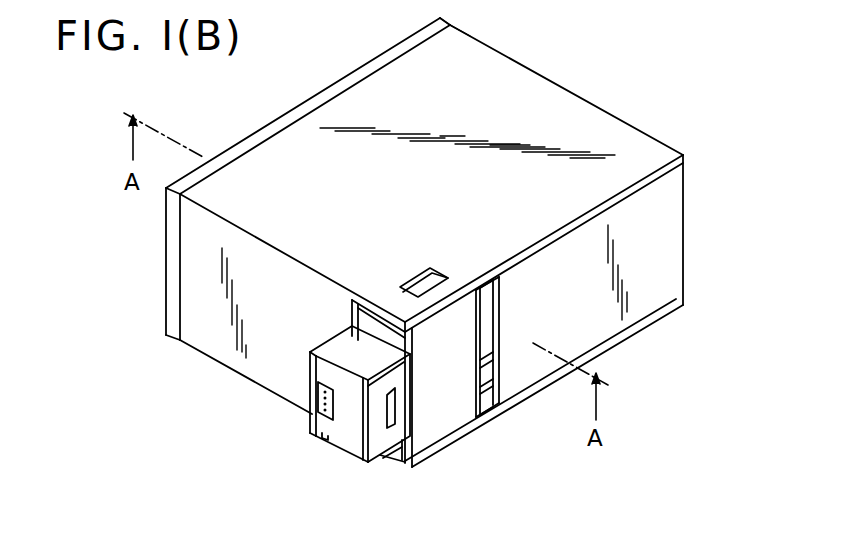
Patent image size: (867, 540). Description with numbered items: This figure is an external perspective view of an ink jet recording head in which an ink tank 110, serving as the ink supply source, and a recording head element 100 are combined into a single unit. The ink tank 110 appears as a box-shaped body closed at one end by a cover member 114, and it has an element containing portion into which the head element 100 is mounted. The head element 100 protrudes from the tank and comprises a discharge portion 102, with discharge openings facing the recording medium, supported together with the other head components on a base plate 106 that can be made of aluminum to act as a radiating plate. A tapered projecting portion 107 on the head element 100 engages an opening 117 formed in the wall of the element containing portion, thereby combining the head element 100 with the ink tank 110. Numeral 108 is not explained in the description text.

The recording head element 100 is at (368, 478).
The discharge portion 102 is at (424, 167).
The base plate 106 is at (469, 12).
The top plate edge 108 is at (510, 18).
The projecting portion 107 is at (437, 283).
The ink tank 110 is at (645, 150).
The cover member 114 is at (168, 270).
The opening 117 is at (429, 268).